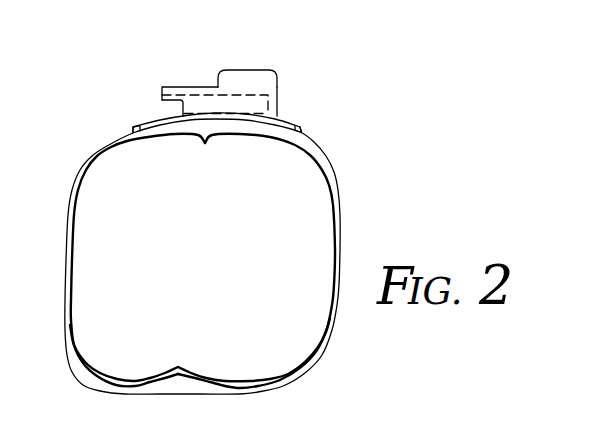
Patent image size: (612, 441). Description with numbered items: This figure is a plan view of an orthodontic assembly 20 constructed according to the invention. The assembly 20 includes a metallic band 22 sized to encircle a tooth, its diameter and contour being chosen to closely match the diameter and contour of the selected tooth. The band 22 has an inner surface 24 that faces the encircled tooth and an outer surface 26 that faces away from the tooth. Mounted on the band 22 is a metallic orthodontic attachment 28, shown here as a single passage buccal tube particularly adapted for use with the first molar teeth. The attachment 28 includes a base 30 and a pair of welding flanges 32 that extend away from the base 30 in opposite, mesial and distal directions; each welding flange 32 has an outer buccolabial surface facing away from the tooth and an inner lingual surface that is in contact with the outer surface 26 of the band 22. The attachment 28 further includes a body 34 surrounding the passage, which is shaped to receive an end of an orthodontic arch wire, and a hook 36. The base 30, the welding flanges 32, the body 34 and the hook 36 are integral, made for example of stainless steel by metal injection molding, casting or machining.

The orthodontic assembly 20 is at (356, 224).
The metallic band 22 is at (337, 172).
The inner surface 24 is at (137, 148).
The outer surface 26 is at (92, 170).
The orthodontic attachment 28 is at (278, 79).
The base 30 is at (148, 126).
The welding flanges 32 is at (134, 128).
The body 34 is at (198, 100).
The hook 36 is at (248, 70).